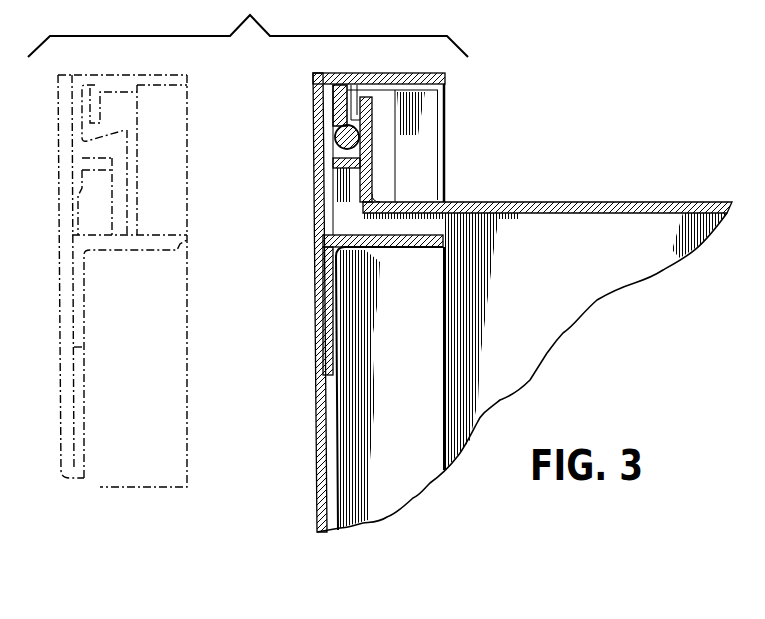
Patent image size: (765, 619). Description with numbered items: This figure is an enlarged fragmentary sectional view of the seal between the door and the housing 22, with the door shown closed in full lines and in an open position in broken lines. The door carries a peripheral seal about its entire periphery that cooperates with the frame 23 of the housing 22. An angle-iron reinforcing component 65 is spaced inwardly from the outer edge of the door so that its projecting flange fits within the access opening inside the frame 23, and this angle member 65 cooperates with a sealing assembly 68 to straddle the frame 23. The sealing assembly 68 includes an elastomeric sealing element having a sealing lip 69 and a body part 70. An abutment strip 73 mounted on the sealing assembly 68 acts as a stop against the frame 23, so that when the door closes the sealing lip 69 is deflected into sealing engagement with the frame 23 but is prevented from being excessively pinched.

The housing 22 is at (527, 202).
The frame 23 is at (372, 162).
The angle-iron reinforcing component 65 is at (323, 265).
The sealing assembly 68 is at (360, 72).
The sealing lip 69 is at (338, 138).
The body part 70 is at (333, 114).
The abutment strip 73 is at (332, 162).